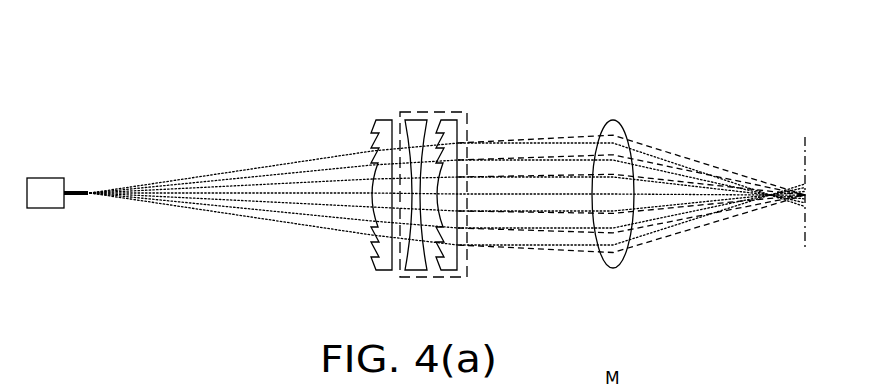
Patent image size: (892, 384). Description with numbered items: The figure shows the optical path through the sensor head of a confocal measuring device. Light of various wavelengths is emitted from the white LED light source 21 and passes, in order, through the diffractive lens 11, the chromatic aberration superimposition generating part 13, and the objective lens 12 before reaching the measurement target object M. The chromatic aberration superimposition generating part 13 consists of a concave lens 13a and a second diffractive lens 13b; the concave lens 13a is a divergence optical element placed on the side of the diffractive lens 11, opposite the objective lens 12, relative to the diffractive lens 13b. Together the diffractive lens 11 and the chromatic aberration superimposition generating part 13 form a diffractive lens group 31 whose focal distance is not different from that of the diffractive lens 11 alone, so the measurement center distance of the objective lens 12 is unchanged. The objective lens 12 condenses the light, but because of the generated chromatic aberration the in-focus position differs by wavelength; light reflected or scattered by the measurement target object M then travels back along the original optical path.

The white LED light source 21 is at (44, 178).
The diffractive lens group 31 is at (445, 73).
The diffractive lens 11 is at (383, 118).
The chromatic aberration superimposition generating part 13 is at (434, 111).
The concave lens 13a is at (413, 268).
The diffractive lens 13b is at (448, 268).
The objective lens 12 is at (613, 124).
The measurement target object M is at (806, 180).